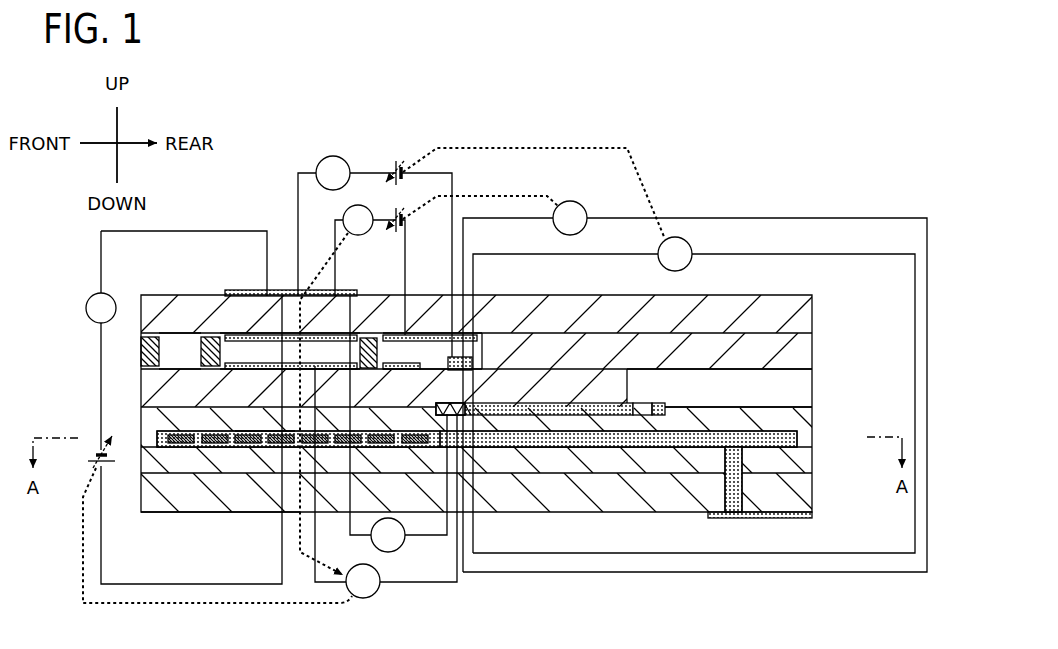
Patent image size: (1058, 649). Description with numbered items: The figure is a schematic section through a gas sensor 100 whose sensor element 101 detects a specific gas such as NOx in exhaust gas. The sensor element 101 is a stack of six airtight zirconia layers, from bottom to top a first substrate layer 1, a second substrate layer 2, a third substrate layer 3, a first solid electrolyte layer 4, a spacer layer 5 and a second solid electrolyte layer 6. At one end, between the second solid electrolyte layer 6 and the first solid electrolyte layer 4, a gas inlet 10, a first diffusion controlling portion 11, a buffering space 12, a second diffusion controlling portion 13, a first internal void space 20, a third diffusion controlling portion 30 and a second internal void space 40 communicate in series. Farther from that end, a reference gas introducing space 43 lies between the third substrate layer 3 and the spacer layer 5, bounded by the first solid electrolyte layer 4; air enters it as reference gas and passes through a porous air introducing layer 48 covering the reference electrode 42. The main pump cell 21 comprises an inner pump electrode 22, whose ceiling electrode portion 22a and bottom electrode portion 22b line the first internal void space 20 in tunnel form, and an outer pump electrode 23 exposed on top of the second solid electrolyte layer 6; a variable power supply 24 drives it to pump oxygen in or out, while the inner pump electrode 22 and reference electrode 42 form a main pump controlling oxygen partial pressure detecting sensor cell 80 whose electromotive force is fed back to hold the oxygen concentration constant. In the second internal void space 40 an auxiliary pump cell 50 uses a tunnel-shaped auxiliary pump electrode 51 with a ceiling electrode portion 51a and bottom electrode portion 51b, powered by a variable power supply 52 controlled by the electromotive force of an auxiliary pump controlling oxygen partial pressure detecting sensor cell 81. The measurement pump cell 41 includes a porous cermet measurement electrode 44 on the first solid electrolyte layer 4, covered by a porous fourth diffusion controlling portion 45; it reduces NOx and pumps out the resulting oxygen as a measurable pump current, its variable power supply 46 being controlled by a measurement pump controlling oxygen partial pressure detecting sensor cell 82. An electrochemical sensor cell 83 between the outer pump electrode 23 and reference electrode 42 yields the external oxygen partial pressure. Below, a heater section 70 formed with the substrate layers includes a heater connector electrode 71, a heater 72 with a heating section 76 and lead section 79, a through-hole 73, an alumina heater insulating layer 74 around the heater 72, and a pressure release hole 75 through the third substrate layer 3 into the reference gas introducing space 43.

The first substrate layer 1 is at (814, 490).
The second substrate layer 2 is at (814, 461).
The third substrate layer 3 is at (814, 423).
The first solid electrolyte layer 4 is at (140, 385).
The spacer layer 5 is at (814, 338).
The second solid electrolyte layer 6 is at (814, 313).
The gas inlet 10 is at (140, 352).
The first diffusion controlling portion 11 is at (149, 336).
The buffering space 12 is at (190, 339).
The second diffusion controlling portion 13 is at (217, 337).
The first internal void space 20 is at (327, 353).
The main pump cell 21 is at (175, 229).
The inner pump electrode 22 is at (280, 330).
The ceiling electrode portion 22a is at (310, 334).
The bottom electrode portion 22b is at (275, 365).
The outer pump electrode 23 is at (235, 291).
The variable power supply 24 is at (86, 458).
The third diffusion controlling portion 30 is at (365, 338).
The second internal void space 40 is at (378, 295).
The measurement pump cell 41 is at (315, 161).
The reference electrode 42 is at (478, 403).
The reference gas introducing space 43 is at (811, 382).
The measurement electrode 44 is at (463, 372).
The fourth diffusion controlling portion 45 is at (447, 358).
The variable power supply 46 is at (396, 162).
The air introducing layer 48 is at (629, 403).
The auxiliary pump cell 50 is at (344, 212).
The auxiliary pump electrode 51 is at (427, 297).
The ceiling electrode portion 51a is at (473, 334).
The bottom electrode portion 51b is at (396, 370).
The variable power supply 52 is at (398, 231).
The heater section 70 is at (840, 405).
The heater connector electrode 71 is at (806, 519).
The heater 72 is at (246, 553).
The through-hole 73 is at (738, 518).
The heater insulating layer 74 is at (158, 450).
The pressure release hole 75 is at (658, 403).
The heating section 76 is at (248, 450).
The lead section 79 is at (597, 450).
The main pump controlling oxygen partial pressure detecting sensor cell 80 is at (392, 588).
The auxiliary pump controlling oxygen partial pressure detecting sensor cell 81 is at (724, 216).
The measurement pump controlling oxygen partial pressure detecting sensor cell 82 is at (728, 253).
The electrochemical sensor cell 83 is at (413, 543).
The gas sensor 100 is at (752, 140).
The sensor element 101 is at (149, 272).